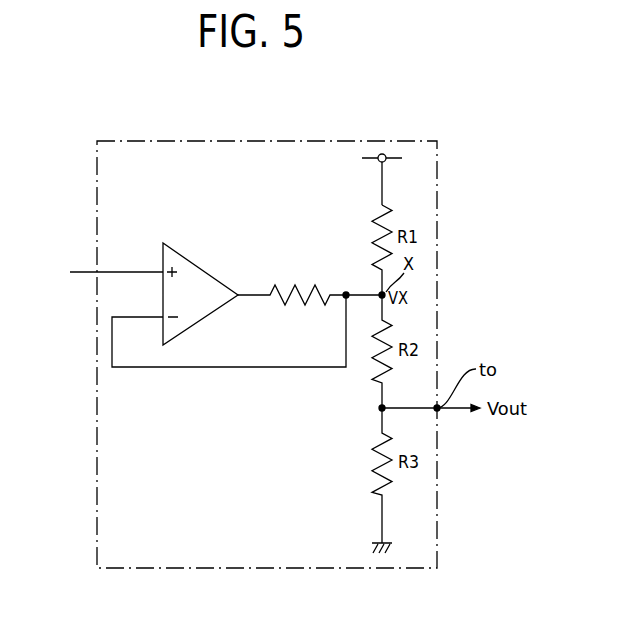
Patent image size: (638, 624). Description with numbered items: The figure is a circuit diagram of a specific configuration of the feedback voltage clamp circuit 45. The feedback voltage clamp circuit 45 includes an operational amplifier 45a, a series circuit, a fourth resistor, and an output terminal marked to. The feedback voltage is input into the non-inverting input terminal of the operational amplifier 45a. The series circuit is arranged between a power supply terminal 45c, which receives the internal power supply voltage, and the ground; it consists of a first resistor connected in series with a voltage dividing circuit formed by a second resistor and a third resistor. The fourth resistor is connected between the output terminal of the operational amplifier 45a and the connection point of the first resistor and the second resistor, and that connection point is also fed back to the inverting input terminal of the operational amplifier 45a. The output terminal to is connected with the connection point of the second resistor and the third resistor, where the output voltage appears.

The feedback voltage clamp circuit 45 is at (198, 140).
The operational amplifier 45a is at (200, 267).
The power supply terminal 45c is at (386, 153).